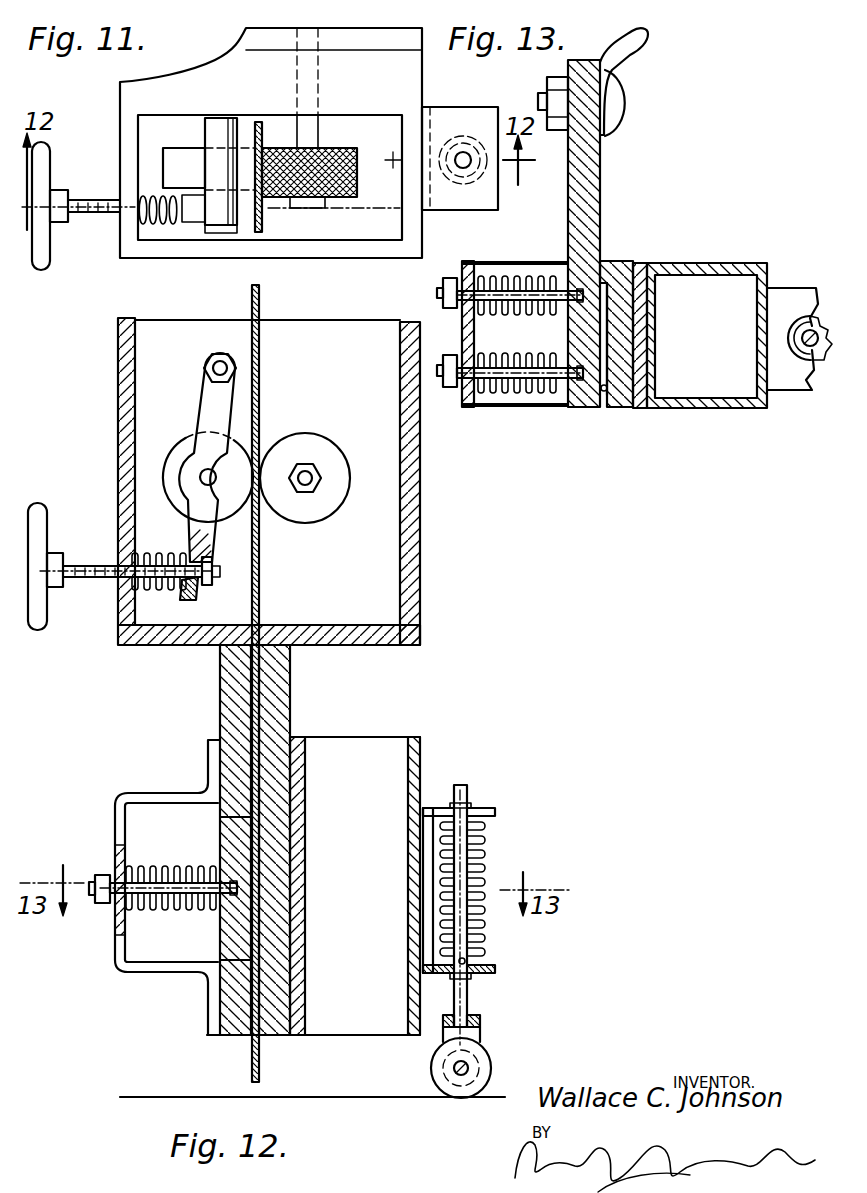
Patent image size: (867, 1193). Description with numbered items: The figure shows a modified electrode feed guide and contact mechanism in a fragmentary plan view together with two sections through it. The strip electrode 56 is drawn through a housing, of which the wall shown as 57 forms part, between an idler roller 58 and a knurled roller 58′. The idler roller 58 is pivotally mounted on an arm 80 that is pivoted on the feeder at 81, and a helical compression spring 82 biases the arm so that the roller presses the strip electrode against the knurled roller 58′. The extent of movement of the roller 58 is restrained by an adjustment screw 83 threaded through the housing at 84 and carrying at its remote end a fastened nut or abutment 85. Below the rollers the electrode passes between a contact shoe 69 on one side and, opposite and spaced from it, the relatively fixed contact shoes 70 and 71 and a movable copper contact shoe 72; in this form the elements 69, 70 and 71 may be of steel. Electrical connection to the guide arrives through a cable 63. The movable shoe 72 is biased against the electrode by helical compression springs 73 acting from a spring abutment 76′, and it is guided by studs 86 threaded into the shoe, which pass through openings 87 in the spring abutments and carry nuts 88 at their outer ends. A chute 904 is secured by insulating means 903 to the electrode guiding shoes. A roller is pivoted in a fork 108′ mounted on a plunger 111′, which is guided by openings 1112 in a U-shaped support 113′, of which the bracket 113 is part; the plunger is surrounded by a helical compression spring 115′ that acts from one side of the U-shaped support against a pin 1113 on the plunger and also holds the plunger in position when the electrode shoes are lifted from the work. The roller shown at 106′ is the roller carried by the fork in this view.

In FIG. 11, the strip electrode 56 is at (262, 231).
In FIG. 13, the strip electrode 56 is at (606, 388).
In FIG. 12, the strip electrode 56 is at (262, 310).
In FIG. 11, the housing 57 is at (413, 91).
In FIG. 12, the housing 57 is at (417, 550).
In FIG. 11, the idler roller 58 is at (182, 165).
In FIG. 12, the idler roller 58 is at (175, 450).
In FIG. 11, the knurled roller 58′ is at (340, 150).
In FIG. 12, the knurled roller 58′ is at (323, 507).
In FIG. 13, the cable 63 is at (633, 48).
In FIG. 13, the contact shoe 69 is at (624, 395).
In FIG. 12, the contact shoe 69 is at (288, 683).
In FIG. 12, the contact shoe 70 is at (232, 707).
In FIG. 12, the contact shoe 71 is at (240, 1025).
In FIG. 13, the movable contact shoe 72 is at (601, 222).
In FIG. 12, the movable contact shoe 72 is at (233, 930).
In FIG. 13, the helical compression springs 73 is at (545, 356).
In FIG. 12, the helical compression springs 73 is at (163, 870).
In FIG. 13, the spring abutment 76′ is at (506, 405).
In FIG. 12, the spring abutment 76′ is at (122, 822).
In FIG. 12, the arm 80 is at (207, 457).
In FIG. 12, the pivot 81 is at (215, 363).
In FIG. 12, the helical compression spring 82 is at (154, 560).
In FIG. 12, the adjustment screw 83 is at (88, 578).
In FIG. 12, the threaded housing portion 84 is at (123, 560).
In FIG. 12, the nut or abutment 85 is at (204, 582).
In FIG. 13, the studs 86 is at (532, 282).
In FIG. 12, the studs 86 is at (167, 905).
In FIG. 13, the openings 87 is at (466, 383).
In FIG. 12, the openings 87 is at (120, 905).
In FIG. 13, the nuts 88 is at (460, 385).
In FIG. 12, the nuts 88 is at (102, 905).
In FIG. 13, the insulating means 903 is at (639, 268).
In FIG. 12, the insulating means 903 is at (295, 737).
In FIG. 13, the chute 904 is at (755, 393).
In FIG. 12, the chute 904 is at (417, 750).
In FIG. 12, the roller 106′ is at (487, 1068).
In FIG. 12, the fork 108′ is at (482, 1032).
In FIG. 11, the plunger 111′ is at (463, 152).
In FIG. 13, the plunger 111′ is at (808, 346).
In FIG. 12, the plunger 111′ is at (463, 790).
In FIG. 12, the openings 1112 is at (473, 808).
In FIG. 12, the pin 1113 is at (462, 965).
In FIG. 12, the bracket 113 is at (497, 812).
In FIG. 11, the U-shaped support 113′ is at (454, 199).
In FIG. 13, the U-shaped support 113′ is at (783, 290).
In FIG. 13, the helical compression spring 115′ is at (802, 316).
In FIG. 12, the helical compression spring 115′ is at (485, 853).